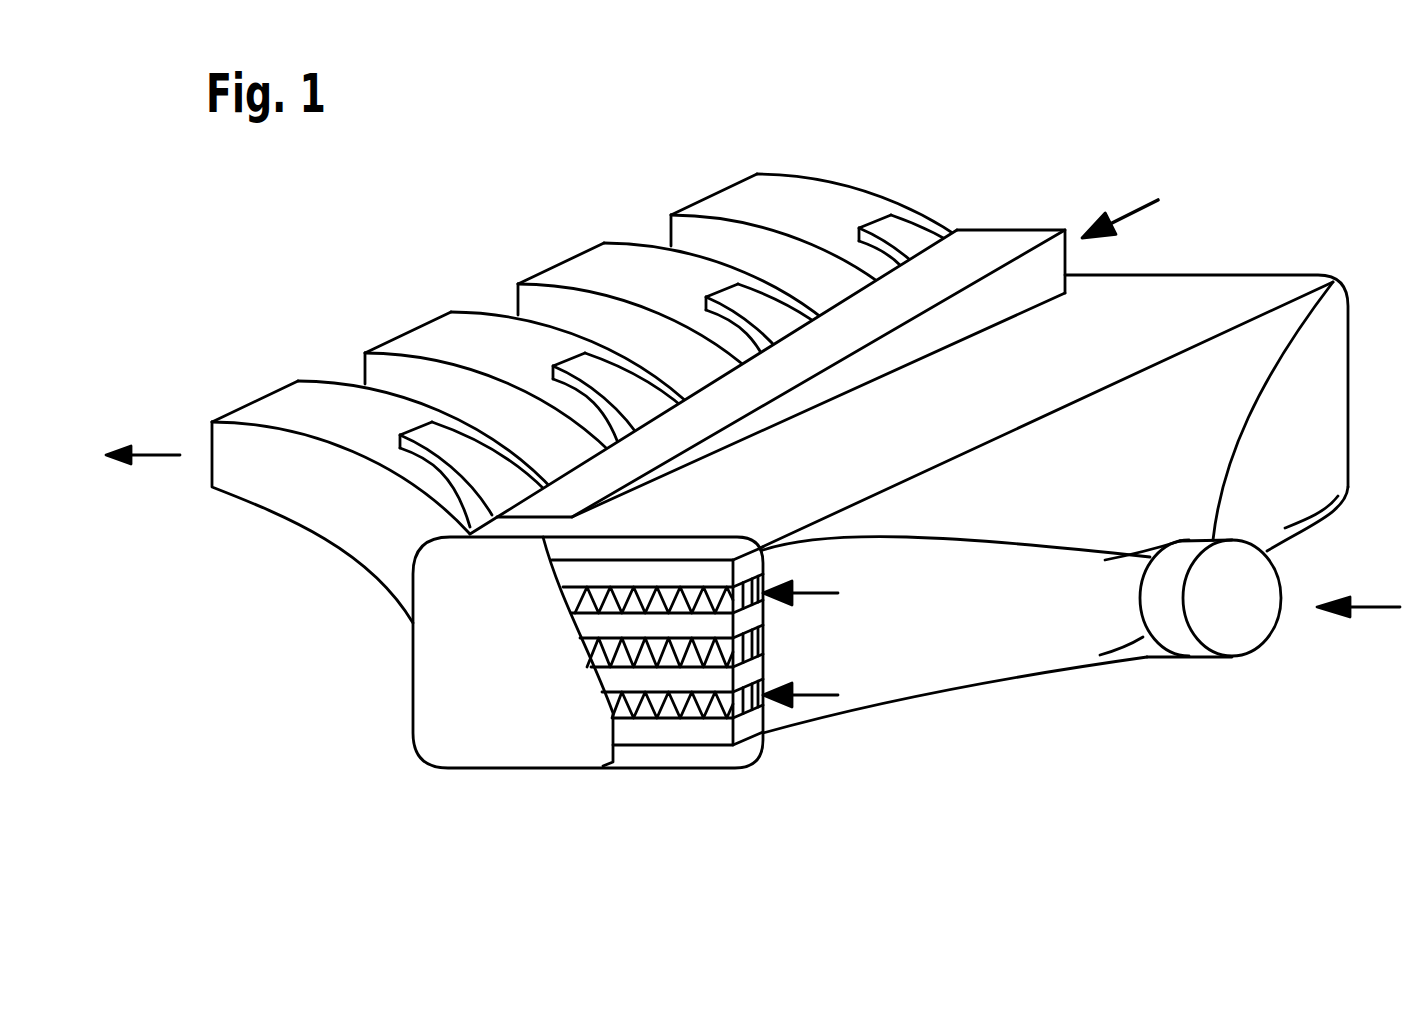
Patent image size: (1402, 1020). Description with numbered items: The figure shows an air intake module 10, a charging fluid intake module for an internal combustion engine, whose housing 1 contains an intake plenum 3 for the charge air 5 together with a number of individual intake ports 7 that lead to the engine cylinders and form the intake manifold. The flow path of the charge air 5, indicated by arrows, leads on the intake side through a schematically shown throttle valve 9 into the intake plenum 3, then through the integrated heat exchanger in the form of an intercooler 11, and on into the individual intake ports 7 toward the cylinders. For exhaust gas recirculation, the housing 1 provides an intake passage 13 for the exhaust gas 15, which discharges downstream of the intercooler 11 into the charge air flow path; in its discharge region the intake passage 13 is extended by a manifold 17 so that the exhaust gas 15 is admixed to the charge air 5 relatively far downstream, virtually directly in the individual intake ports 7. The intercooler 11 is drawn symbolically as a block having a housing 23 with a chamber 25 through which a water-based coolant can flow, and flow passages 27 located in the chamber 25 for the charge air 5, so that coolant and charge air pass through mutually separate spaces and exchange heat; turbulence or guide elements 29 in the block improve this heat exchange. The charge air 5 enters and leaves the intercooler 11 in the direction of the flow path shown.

The housing 1 is at (1202, 253).
The intake plenum 3 is at (974, 399).
The charge air 5 is at (160, 455).
The individual intake ports 7 is at (320, 427).
The throttle valve 9 is at (1237, 613).
The air intake module 10 is at (1326, 207).
The intercooler 11 is at (673, 735).
The intake passage 13 is at (993, 245).
The exhaust gas 15 is at (1132, 210).
The manifold 17 is at (440, 438).
The housing of the heat exchanger block 23 is at (677, 550).
The chamber 25 is at (608, 580).
The flow passages 27 is at (765, 638).
The guide elements 29 is at (607, 653).